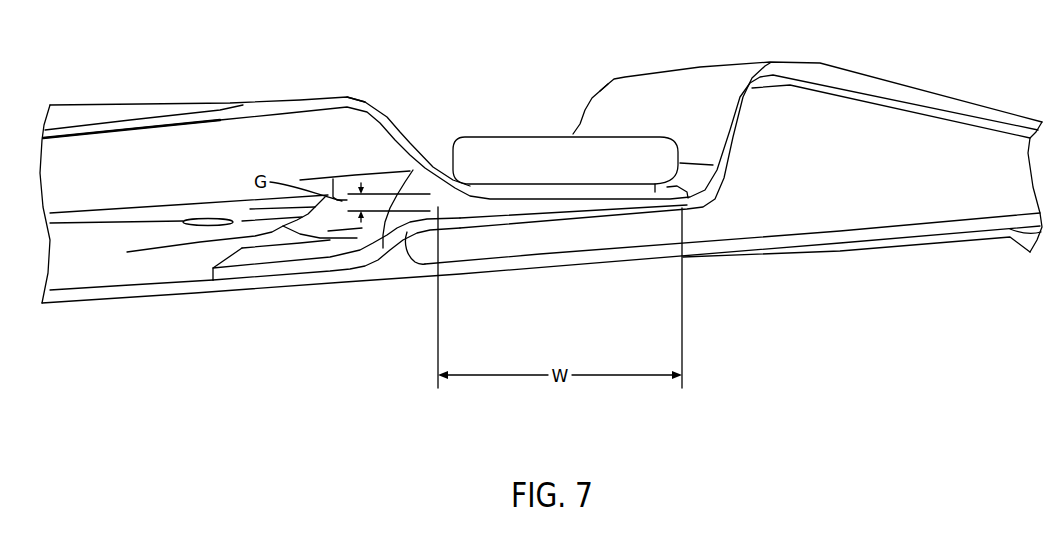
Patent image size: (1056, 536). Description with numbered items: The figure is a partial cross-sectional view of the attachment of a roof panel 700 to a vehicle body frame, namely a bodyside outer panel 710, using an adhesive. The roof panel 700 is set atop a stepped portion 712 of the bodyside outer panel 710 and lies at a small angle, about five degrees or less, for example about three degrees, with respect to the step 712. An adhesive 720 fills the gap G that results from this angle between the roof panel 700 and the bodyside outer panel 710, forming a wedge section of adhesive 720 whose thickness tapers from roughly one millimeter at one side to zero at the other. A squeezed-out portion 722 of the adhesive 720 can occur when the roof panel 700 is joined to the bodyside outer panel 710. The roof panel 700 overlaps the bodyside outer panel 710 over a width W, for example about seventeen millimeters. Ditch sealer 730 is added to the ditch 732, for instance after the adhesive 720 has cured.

The roof panel 700 is at (348, 97).
The bodyside outer panel 710 is at (878, 77).
The stepped portion 712 is at (730, 206).
The adhesive 720 is at (440, 207).
The squeezed-out portion 722 is at (380, 230).
The ditch sealer 730 is at (660, 133).
The ditch 732 is at (408, 108).